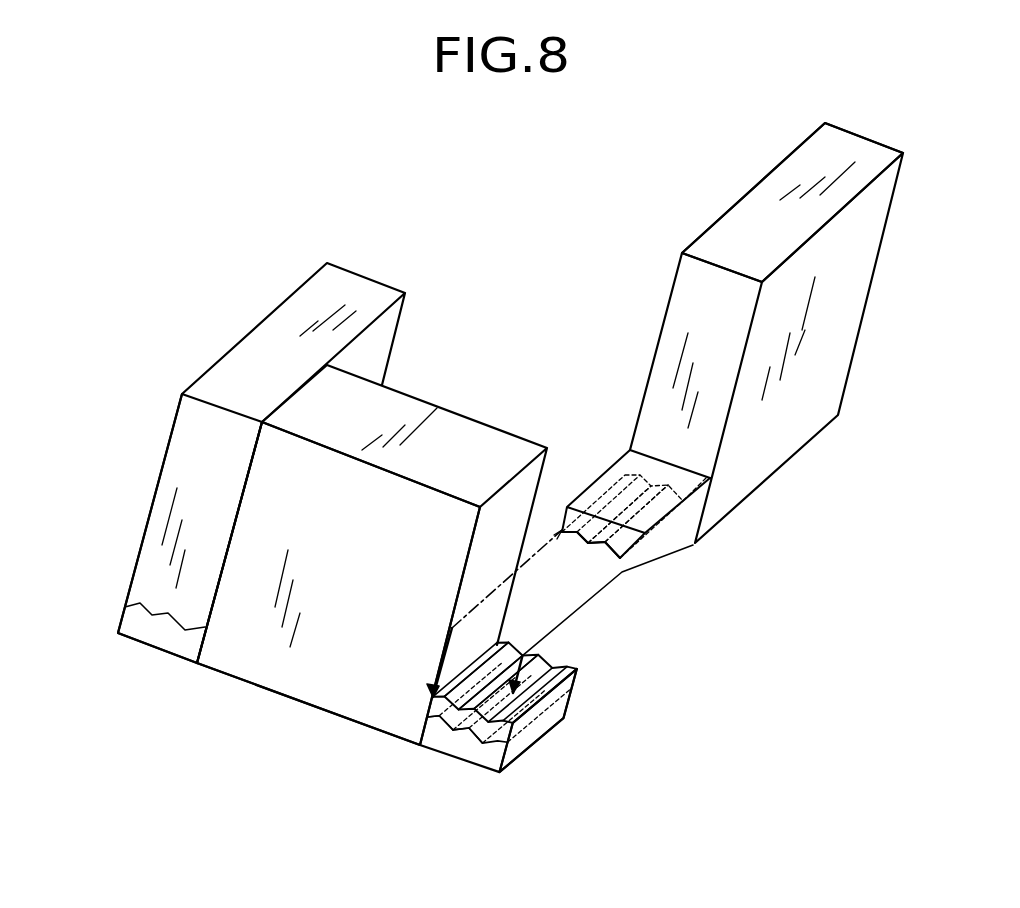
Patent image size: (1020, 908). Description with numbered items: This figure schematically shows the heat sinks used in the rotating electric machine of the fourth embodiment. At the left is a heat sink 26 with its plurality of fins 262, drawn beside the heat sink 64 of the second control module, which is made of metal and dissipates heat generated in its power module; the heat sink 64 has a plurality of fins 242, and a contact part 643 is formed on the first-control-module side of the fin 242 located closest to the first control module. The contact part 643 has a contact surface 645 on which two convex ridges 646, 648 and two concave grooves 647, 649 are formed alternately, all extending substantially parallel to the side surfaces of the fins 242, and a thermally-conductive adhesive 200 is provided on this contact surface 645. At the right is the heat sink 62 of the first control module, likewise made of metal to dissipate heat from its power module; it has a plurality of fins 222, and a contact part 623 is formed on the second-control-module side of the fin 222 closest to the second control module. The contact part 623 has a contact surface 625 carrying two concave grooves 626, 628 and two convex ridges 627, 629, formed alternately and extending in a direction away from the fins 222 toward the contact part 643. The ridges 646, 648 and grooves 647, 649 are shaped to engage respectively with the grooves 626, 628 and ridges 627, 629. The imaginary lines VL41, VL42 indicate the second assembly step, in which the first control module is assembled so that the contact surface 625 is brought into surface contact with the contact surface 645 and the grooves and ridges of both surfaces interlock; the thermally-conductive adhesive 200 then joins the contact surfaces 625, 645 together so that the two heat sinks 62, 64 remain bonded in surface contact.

The heat sink 26 is at (219, 343).
The fins 262 is at (210, 452).
The heat sink 64 is at (455, 399).
The fins 242 is at (322, 683).
The contact part 643 is at (537, 773).
The contact surface 645 is at (520, 745).
The convex ridge 646 is at (431, 721).
The concave groove 647 is at (451, 729).
The convex ridge 648 is at (470, 732).
The concave groove 649 is at (487, 747).
The thermally-conductive adhesive 200 is at (585, 690).
The imaginary line VL41 is at (505, 577).
The imaginary line VL42 is at (563, 625).
The heat sink 62 is at (880, 131).
The fins 222 is at (770, 227).
The contact part 623 is at (690, 505).
The contact surface 625 is at (672, 530).
The concave groove 626 is at (577, 534).
The convex ridge 627 is at (588, 546).
The concave groove 628 is at (605, 546).
The convex ridge 629 is at (620, 561).